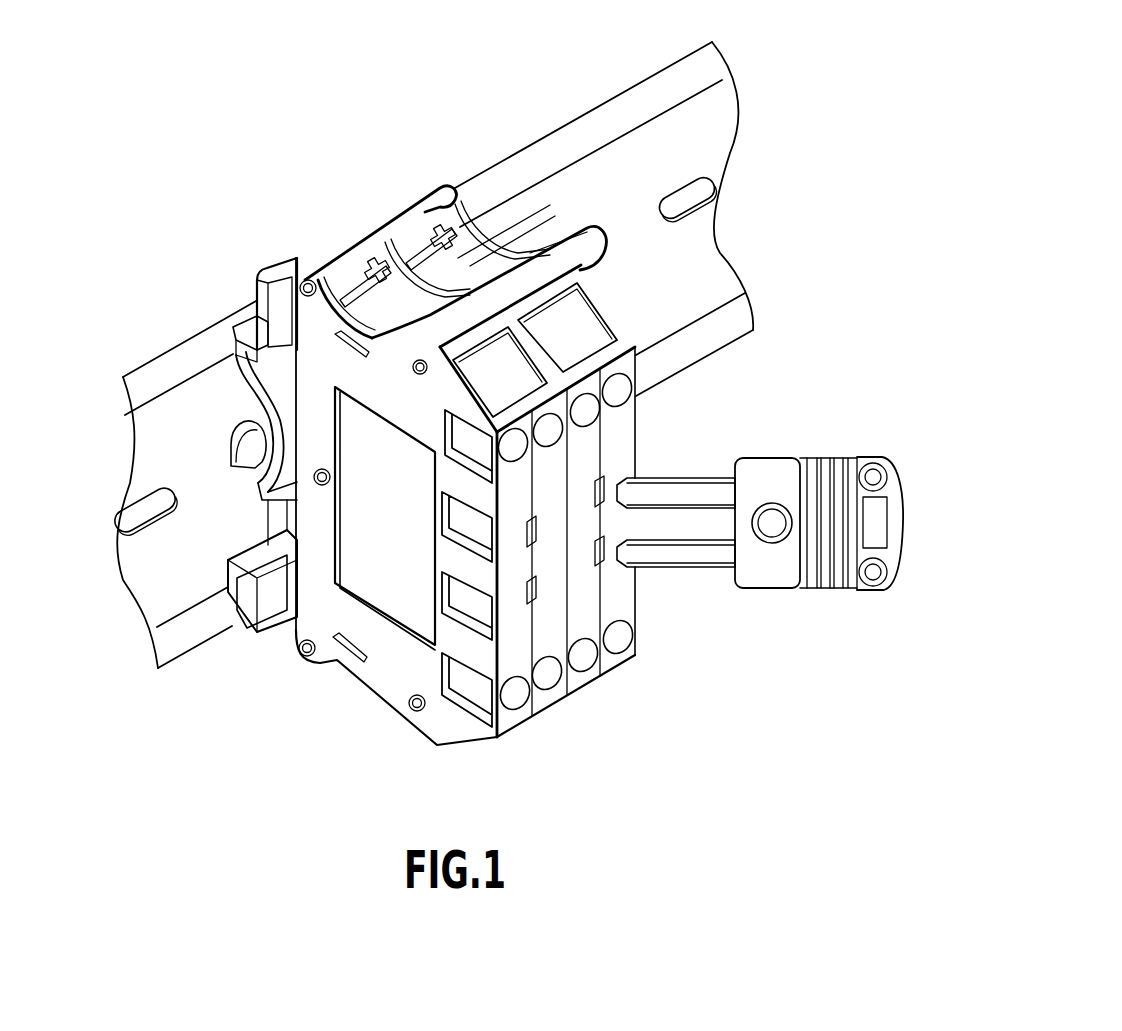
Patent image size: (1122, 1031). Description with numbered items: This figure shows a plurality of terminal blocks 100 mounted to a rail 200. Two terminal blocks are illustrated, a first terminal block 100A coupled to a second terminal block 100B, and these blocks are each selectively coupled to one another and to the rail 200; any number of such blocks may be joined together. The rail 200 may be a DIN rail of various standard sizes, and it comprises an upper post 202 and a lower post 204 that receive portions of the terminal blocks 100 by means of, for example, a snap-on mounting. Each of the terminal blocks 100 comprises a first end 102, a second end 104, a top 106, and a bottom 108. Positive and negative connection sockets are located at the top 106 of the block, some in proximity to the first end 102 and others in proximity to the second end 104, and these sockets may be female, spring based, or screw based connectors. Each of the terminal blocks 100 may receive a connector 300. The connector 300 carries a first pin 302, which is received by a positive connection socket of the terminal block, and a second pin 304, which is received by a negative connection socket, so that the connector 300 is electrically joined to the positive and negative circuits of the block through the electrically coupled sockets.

The terminal blocks 100 is at (439, 420).
The first terminal block 100A is at (312, 275).
The second terminal block 100B is at (435, 186).
The first end 102 is at (455, 231).
The second end 104 is at (476, 768).
The top 106 is at (623, 592).
The bottom 108 is at (243, 442).
The rail 200 is at (404, 385).
The upper post 202 is at (197, 342).
The lower post 204 is at (167, 650).
The connector 300 is at (760, 537).
The first pin 302 is at (713, 568).
The second pin 304 is at (670, 477).